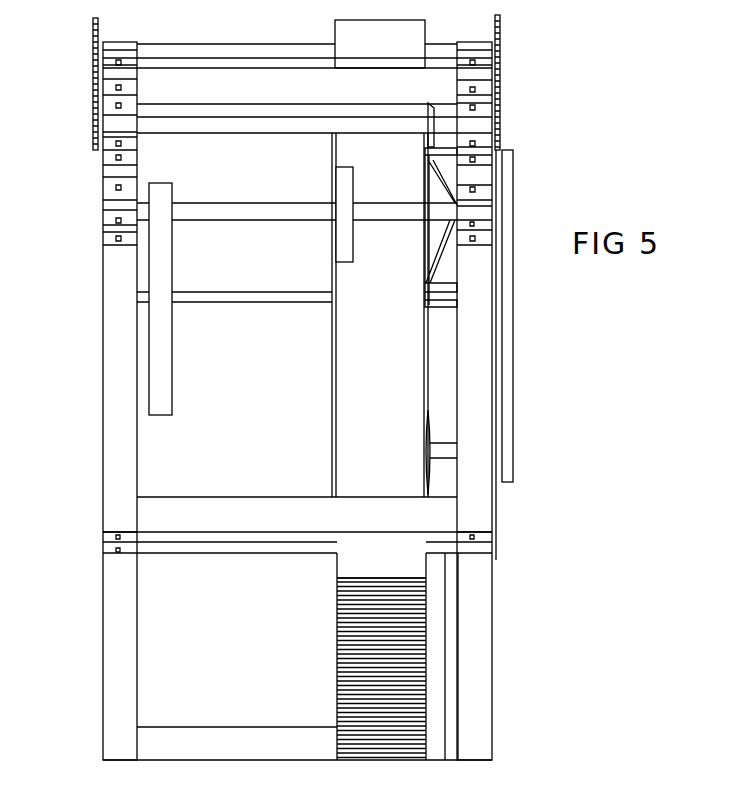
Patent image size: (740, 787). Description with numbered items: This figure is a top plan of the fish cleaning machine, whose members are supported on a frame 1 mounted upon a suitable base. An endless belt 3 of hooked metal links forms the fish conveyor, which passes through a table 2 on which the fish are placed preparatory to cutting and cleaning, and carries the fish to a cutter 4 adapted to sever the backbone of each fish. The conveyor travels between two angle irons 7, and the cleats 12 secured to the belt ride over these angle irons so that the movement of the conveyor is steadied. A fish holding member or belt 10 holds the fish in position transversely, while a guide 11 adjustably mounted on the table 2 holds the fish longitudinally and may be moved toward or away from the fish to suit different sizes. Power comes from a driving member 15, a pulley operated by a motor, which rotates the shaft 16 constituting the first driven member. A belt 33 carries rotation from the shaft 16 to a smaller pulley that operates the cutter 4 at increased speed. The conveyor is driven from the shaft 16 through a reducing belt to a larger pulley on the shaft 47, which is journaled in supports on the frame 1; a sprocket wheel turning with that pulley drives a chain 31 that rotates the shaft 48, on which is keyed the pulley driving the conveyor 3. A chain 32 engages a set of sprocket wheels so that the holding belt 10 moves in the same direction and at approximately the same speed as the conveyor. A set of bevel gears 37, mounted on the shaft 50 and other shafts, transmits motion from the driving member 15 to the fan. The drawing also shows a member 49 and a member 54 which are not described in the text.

The frame 1 is at (106, 474).
The table 2 is at (297, 694).
The endless belt 3 is at (337, 640).
The cutter 4 is at (429, 424).
The angle irons 7 is at (332, 370).
The fish holding member or belt 10 is at (380, 315).
The guide 11 is at (456, 620).
The cleats 12 is at (337, 590).
The driving member 15 is at (353, 180).
The shaft 16 is at (275, 204).
The chain 31 is at (500, 70).
The chain 32 is at (96, 74).
The belt 33 is at (513, 268).
The bevel gears 37 is at (432, 110).
The shaft 47 is at (218, 294).
The shaft 48 is at (222, 548).
The top beam 49 is at (300, 45).
The shaft 50 is at (223, 130).
The plate 54 is at (172, 240).